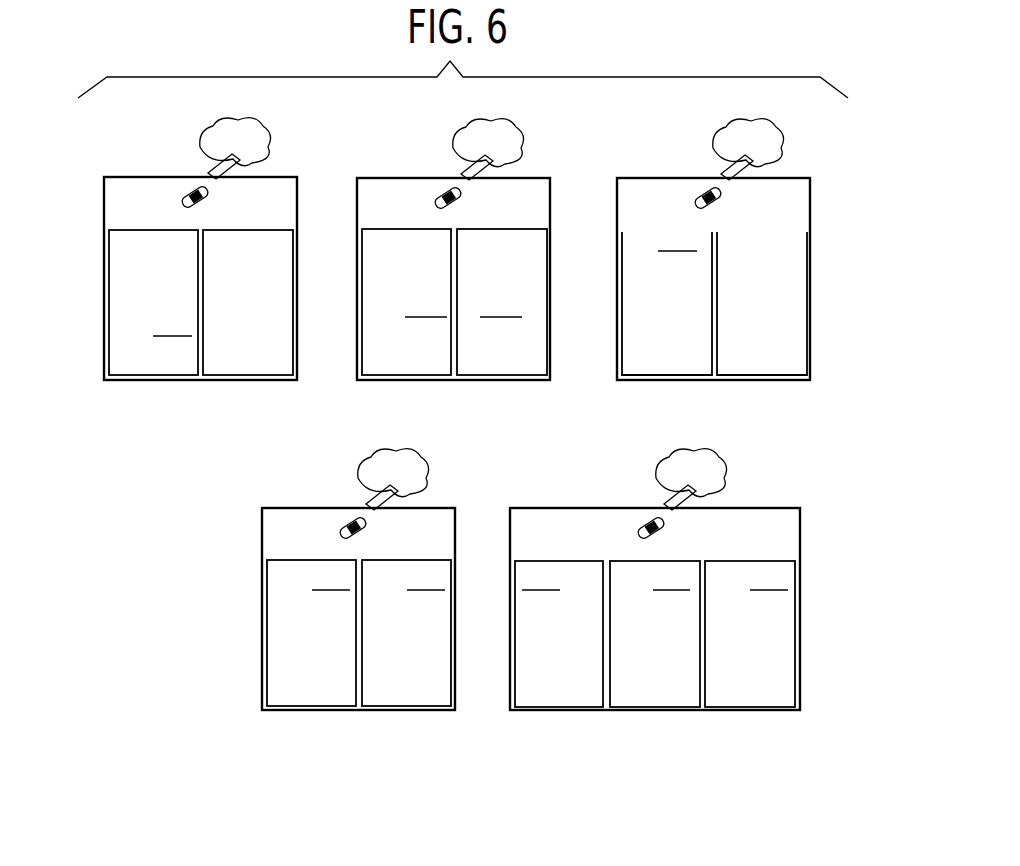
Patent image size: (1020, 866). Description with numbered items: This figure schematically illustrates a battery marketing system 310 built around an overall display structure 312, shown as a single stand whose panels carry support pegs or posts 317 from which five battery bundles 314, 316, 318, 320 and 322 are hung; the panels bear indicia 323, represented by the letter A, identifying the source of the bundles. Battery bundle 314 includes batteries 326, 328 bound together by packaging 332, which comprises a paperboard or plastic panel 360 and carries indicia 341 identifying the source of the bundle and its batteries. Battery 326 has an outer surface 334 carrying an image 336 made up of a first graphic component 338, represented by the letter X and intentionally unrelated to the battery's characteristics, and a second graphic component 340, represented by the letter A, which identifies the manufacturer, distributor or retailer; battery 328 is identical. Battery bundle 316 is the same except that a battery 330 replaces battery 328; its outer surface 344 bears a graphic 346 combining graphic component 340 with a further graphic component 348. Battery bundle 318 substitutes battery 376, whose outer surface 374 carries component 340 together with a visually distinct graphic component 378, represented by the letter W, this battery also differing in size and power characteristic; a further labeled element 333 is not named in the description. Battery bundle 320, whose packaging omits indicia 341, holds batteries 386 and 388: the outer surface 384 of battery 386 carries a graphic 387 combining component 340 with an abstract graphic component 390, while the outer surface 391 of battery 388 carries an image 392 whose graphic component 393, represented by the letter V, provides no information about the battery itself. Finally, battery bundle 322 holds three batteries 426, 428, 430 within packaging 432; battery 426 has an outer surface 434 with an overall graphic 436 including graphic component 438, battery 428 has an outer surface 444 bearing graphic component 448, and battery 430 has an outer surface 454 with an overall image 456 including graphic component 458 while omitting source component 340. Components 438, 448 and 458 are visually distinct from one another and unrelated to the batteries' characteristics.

The battery marketing system 310 is at (100, 140).
The display structure 312 is at (255, 140).
The battery bundle 314 is at (297, 173).
The battery bundle 316 is at (550, 173).
The support pegs or posts 317 is at (207, 167).
The battery bundle 318 is at (810, 173).
The battery bundle 320 is at (445, 506).
The battery bundle 322 is at (787, 506).
The indicia 323 is at (222, 148).
The battery 326 is at (124, 336).
The battery 328 is at (275, 358).
The battery 330 is at (528, 331).
The packaging 332 is at (300, 258).
The module housing wall 333 is at (812, 222).
The outer surface 334 is at (172, 322).
The image 336 is at (142, 312).
The first graphic component 338 is at (147, 273).
The second graphic component 340 is at (147, 357).
The indicia 341 is at (288, 205).
The outer surface 344 is at (463, 303).
The graphic 346 is at (525, 362).
The graphic component 348 is at (510, 275).
The panel 360 is at (104, 207).
The outer surface 374 is at (677, 237).
The battery 376 is at (637, 333).
The graphic component 378 is at (673, 272).
The outer surface 384 is at (331, 577).
The battery 386 is at (288, 609).
The graphic 387 is at (283, 642).
The battery 388 is at (412, 685).
The graphic component 390 is at (310, 616).
The outer surface 391 is at (426, 577).
The image 392 is at (377, 693).
The graphic component 393 is at (412, 610).
The battery 426 is at (582, 688).
The battery 428 is at (650, 697).
The battery 430 is at (733, 697).
The packaging 432 is at (803, 548).
The outer surface 434 is at (541, 577).
The overall graphic 436 is at (523, 697).
The graphic component 438 is at (552, 603).
The outer surface 444 is at (672, 577).
The graphic component 448 is at (650, 607).
The outer surface 454 is at (769, 577).
The overall image 456 is at (775, 697).
The graphic component 458 is at (755, 613).